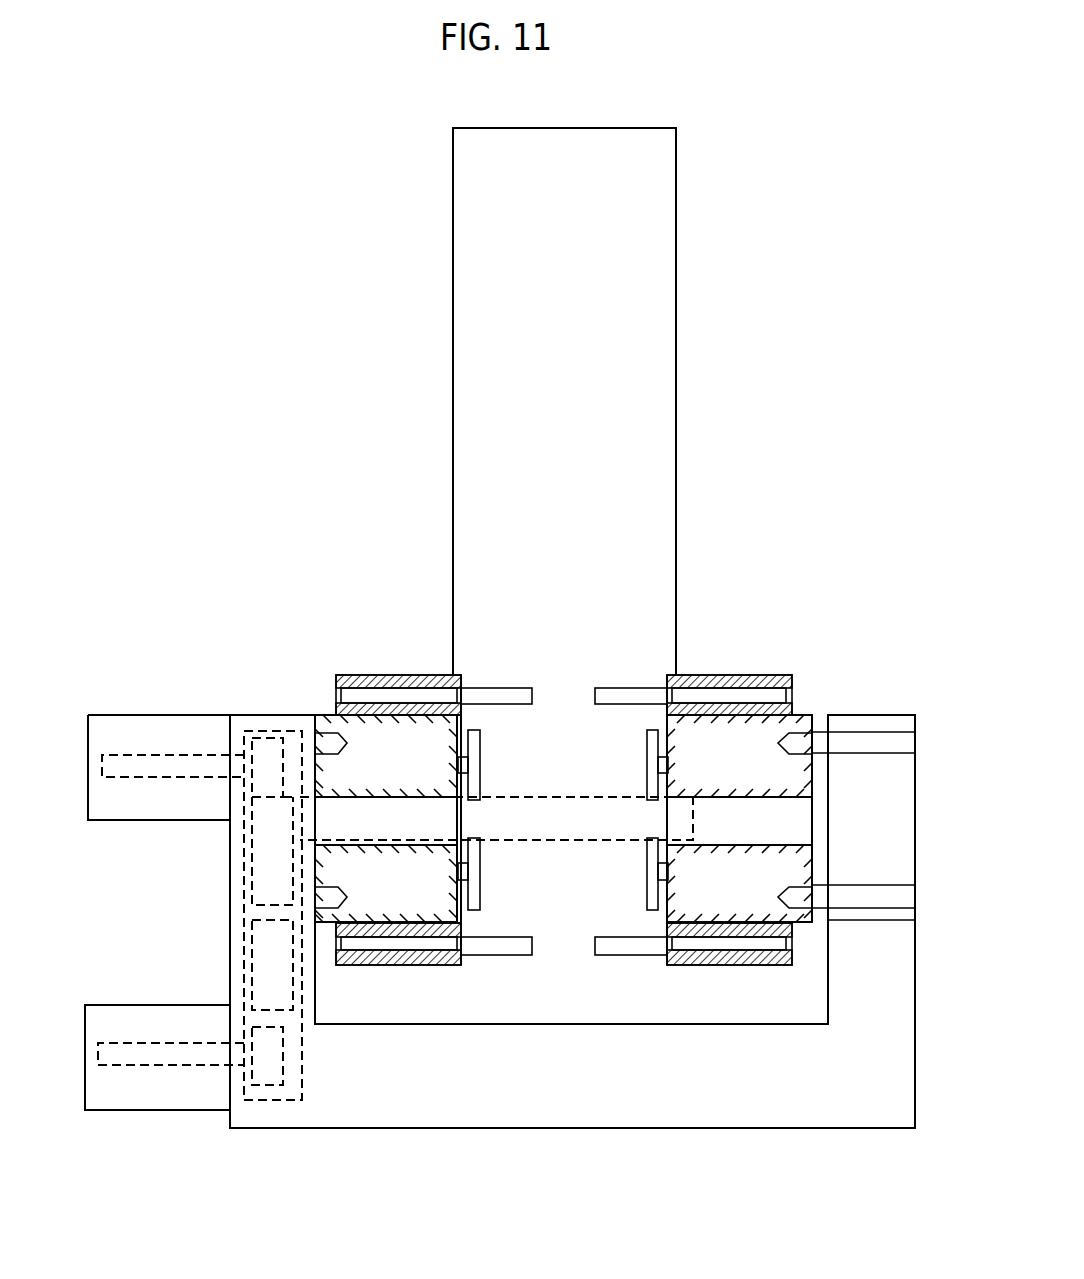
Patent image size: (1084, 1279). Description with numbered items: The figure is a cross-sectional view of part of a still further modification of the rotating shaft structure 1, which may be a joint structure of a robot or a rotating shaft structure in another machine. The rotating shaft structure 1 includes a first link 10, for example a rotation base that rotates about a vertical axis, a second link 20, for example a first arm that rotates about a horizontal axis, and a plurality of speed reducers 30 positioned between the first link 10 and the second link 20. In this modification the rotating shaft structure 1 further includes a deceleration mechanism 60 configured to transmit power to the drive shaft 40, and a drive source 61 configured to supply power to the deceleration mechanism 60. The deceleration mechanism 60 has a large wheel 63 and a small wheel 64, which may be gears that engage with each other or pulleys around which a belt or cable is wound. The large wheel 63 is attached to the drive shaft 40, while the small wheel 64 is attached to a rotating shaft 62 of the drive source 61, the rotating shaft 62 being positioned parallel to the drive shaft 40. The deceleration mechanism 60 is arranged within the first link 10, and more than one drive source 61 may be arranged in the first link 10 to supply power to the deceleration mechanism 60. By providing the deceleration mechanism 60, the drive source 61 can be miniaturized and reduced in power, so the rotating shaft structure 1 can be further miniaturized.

The rotating shaft structure 1 is at (293, 306).
The first link 10 is at (580, 1115).
The second link 20 is at (645, 222).
The speed reducer 30 is at (383, 673).
The drive shaft 40 is at (549, 797).
The deceleration mechanism 60 is at (287, 731).
The drive source 61 is at (143, 714).
The rotating shaft 62 is at (187, 778).
The large wheel 63 is at (268, 872).
The small wheel 64 is at (268, 737).